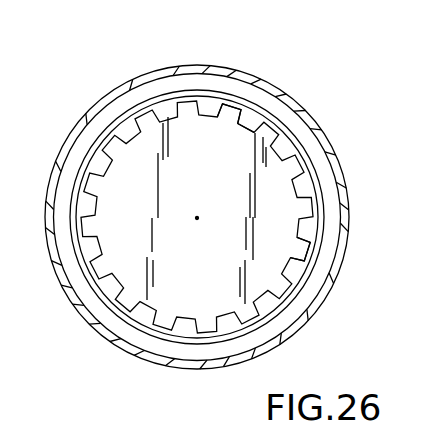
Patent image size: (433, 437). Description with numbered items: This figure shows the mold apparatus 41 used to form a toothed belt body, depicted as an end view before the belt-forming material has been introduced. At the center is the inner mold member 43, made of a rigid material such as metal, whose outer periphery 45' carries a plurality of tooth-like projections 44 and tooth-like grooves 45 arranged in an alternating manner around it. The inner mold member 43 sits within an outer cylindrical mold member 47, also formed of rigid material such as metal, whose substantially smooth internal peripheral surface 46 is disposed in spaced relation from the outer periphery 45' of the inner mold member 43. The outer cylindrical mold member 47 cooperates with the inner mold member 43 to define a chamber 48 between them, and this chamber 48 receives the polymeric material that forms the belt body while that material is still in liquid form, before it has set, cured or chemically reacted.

The mold apparatus 41 is at (326, 109).
The inner mold member 43 is at (285, 194).
The tooth-like projections 44 is at (251, 118).
The tooth-like grooves 45 is at (238, 68).
The outer periphery 45' is at (347, 266).
The internal peripheral surface 46 is at (326, 227).
The outer cylindrical mold member 47 is at (80, 116).
The chamber 48 is at (163, 89).